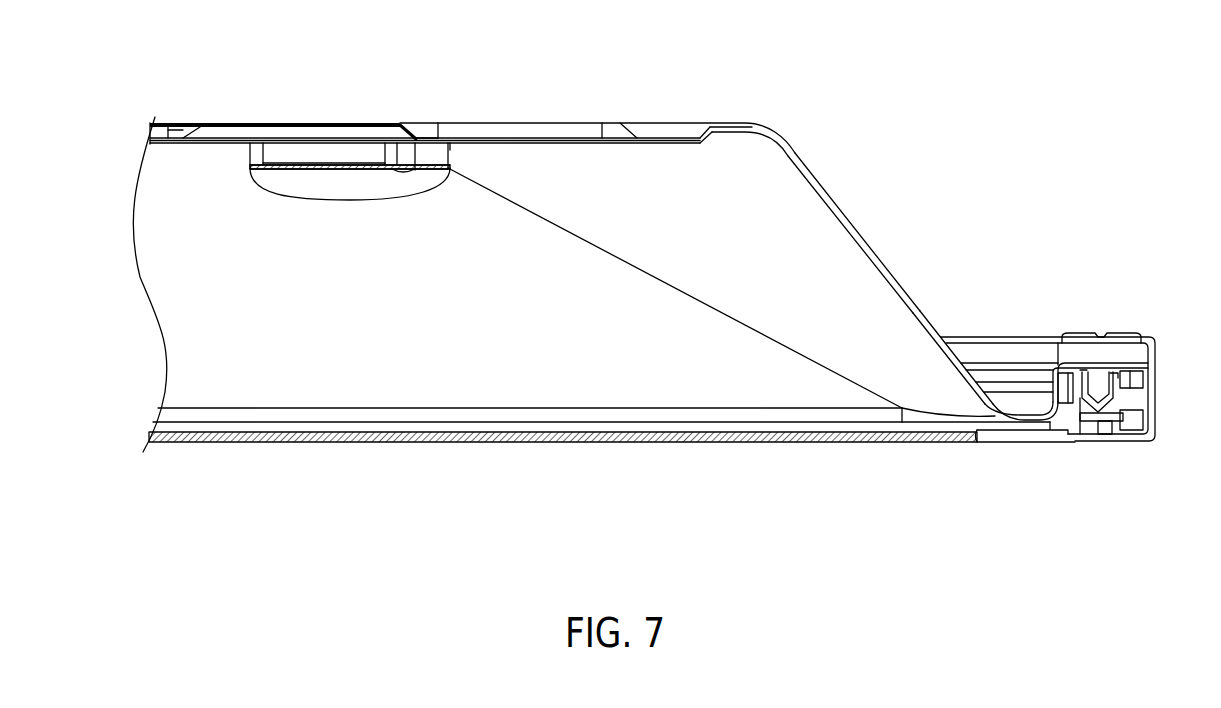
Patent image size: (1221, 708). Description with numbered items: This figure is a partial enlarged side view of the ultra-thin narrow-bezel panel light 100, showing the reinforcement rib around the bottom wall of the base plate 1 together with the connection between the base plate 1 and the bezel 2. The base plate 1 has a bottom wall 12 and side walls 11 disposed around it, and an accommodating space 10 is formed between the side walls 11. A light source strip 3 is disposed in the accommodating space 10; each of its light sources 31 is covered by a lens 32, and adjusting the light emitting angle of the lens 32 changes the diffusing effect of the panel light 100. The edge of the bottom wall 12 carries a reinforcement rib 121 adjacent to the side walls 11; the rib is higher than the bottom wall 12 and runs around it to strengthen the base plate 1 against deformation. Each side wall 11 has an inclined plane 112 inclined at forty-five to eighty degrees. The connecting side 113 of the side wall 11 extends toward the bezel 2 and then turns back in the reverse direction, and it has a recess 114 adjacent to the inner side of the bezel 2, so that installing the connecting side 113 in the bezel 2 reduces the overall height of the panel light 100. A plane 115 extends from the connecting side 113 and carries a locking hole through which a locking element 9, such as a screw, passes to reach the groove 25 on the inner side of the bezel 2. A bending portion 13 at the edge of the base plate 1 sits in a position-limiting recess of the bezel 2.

The base plate 1 is at (780, 133).
The bezel 2 is at (1158, 356).
The light source strip 3 is at (342, 135).
The locking element 9 is at (1107, 340).
The accommodating space 10 is at (190, 300).
The side wall 11 is at (845, 212).
The bottom wall 12 is at (528, 133).
The bending portion 13 is at (1148, 398).
The groove 25 is at (1103, 441).
The light source 31 is at (298, 152).
The lens 32 is at (350, 185).
The ultra-thin narrow-bezel panel light 100 is at (430, 97).
The inclined plane 112 is at (925, 307).
The connecting side 113 is at (1148, 376).
The recess 114 is at (1027, 417).
The plane 115 is at (1085, 358).
The reinforcement rib 121 is at (723, 125).